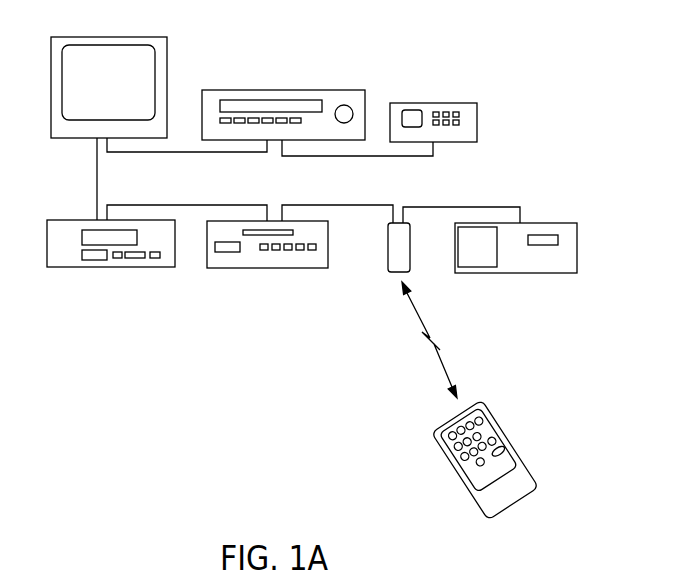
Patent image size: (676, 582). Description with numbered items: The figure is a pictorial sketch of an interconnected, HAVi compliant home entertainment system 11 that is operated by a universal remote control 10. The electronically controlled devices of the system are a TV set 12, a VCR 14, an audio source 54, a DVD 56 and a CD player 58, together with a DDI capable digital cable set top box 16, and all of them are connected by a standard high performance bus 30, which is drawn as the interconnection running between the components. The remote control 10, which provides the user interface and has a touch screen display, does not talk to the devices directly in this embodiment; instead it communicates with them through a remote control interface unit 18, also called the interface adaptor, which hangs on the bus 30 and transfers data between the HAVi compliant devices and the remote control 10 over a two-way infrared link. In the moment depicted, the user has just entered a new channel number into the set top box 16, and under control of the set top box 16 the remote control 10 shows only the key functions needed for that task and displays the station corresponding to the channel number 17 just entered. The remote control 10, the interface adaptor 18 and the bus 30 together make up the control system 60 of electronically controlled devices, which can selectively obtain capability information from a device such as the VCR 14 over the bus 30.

The remote control 10 is at (500, 432).
The home entertainment system 11 is at (600, 141).
The TV set 12 is at (167, 60).
The VCR 14 is at (152, 268).
The digital cable set top box 16 is at (477, 118).
The channel number 17 is at (420, 118).
The remote control interface unit 18 is at (388, 258).
The IEEE 1394 bus 30 is at (430, 156).
The audio source 54 is at (348, 90).
The DVD 56 is at (231, 268).
The CD player 58 is at (577, 255).
The control system 60 is at (106, 367).